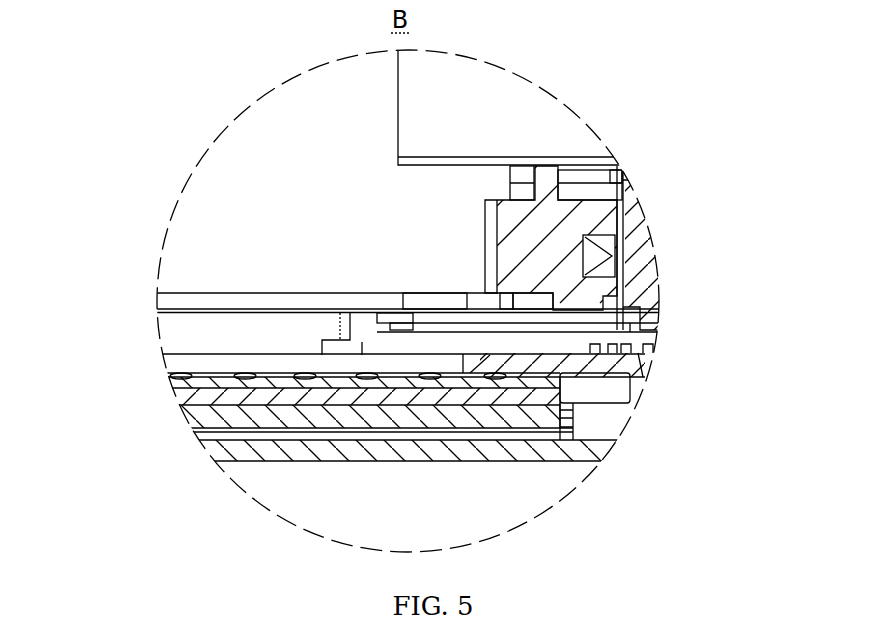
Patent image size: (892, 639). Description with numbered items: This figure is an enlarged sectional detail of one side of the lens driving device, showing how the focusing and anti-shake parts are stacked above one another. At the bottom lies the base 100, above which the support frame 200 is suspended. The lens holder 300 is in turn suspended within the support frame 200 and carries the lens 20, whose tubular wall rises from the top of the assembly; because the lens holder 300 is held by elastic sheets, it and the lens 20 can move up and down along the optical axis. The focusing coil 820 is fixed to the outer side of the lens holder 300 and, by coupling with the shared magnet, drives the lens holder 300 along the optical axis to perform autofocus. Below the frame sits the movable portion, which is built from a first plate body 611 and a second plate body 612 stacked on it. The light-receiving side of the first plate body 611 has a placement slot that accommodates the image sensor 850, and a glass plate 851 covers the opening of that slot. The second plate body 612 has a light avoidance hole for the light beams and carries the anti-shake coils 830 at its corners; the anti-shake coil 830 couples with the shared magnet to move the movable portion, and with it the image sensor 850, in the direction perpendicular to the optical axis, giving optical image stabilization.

The lens 20 is at (242, 197).
The lens holder 300 is at (600, 213).
The focusing coil 820 is at (600, 262).
The support frame 200 is at (637, 283).
The anti-shake coil 830 is at (362, 342).
The second plate body 612 is at (592, 375).
The glass plate 851 is at (187, 377).
The image sensor 850 is at (210, 398).
The first plate body 611 is at (203, 440).
The base 100 is at (293, 453).